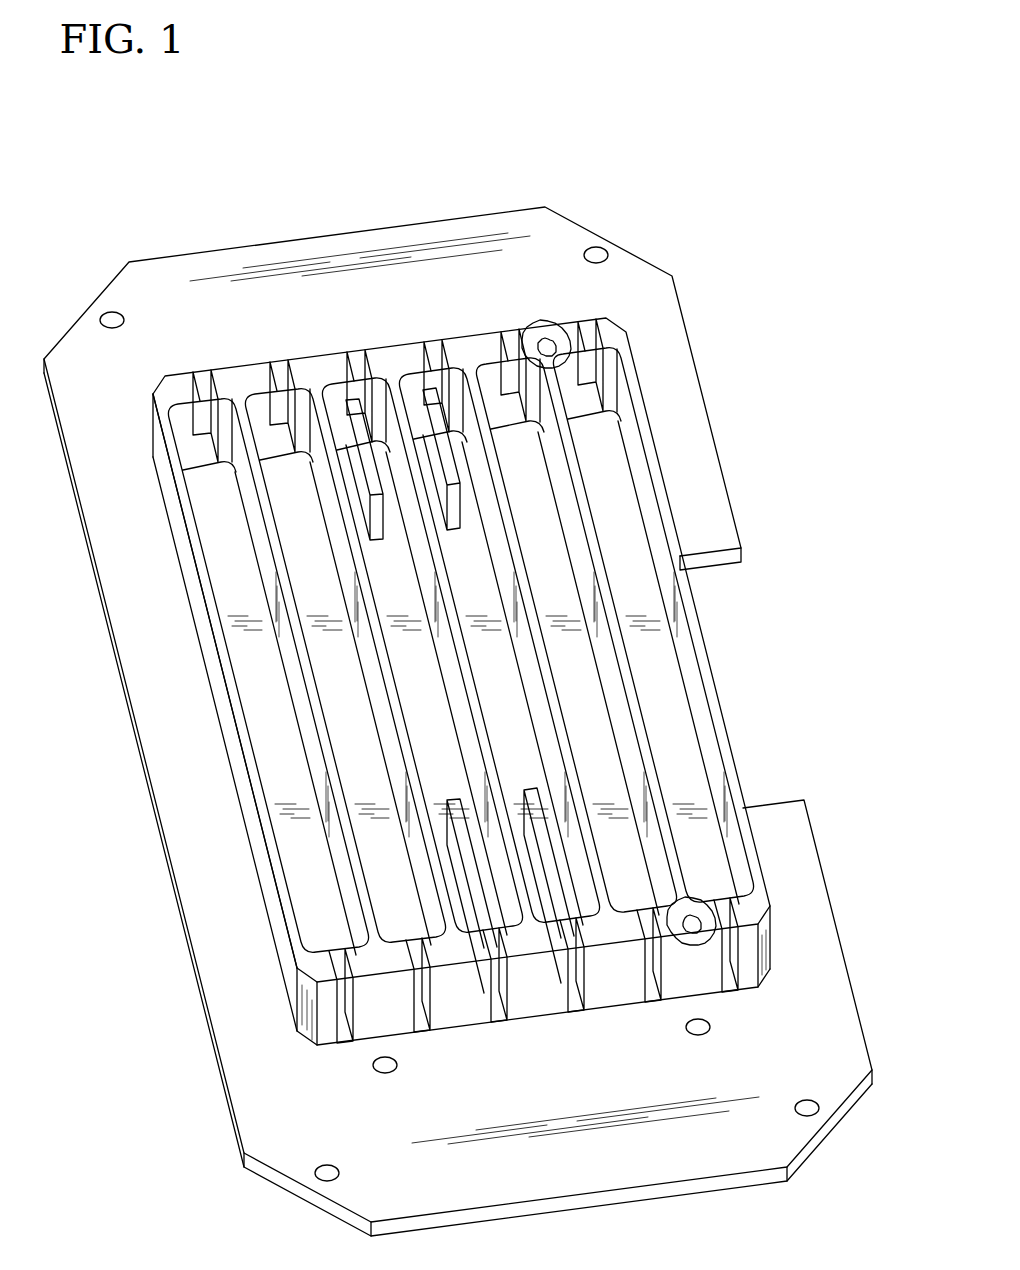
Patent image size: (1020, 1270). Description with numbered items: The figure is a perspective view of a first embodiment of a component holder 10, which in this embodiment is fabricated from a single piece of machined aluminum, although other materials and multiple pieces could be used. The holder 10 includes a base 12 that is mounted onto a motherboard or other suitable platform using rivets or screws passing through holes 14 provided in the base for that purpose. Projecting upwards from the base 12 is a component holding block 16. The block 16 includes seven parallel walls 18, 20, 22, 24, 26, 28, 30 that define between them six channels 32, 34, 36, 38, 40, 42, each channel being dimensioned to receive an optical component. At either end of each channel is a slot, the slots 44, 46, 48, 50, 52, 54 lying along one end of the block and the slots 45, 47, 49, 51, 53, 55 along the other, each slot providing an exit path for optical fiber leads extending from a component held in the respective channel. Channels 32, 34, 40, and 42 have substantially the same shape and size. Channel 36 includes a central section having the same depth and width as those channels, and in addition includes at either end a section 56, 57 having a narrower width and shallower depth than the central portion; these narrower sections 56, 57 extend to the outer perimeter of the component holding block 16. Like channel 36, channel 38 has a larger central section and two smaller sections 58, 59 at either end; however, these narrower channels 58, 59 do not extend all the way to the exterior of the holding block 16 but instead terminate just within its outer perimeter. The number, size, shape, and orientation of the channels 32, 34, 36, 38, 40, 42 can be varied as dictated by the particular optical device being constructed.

The component holder 10 is at (652, 129).
The base 12 is at (140, 285).
The holes 14 is at (597, 247).
The component holding block 16 is at (654, 348).
The wall 18 is at (205, 587).
The wall 20 is at (300, 650).
The wall 22 is at (370, 603).
The wall 24 is at (442, 582).
The wall 26 is at (537, 640).
The wall 28 is at (605, 596).
The wall 30 is at (673, 540).
The channel 32 is at (266, 702).
The channel 34 is at (357, 741).
The channel 36 is at (432, 712).
The channel 38 is at (502, 693).
The channel 40 is at (597, 733).
The channel 42 is at (665, 702).
The slot 44 is at (339, 1000).
The slot 46 is at (416, 992).
The slot 48 is at (494, 985).
The slot 50 is at (573, 980).
The slot 52 is at (645, 970).
The slot 54 is at (723, 960).
The slot 45 is at (195, 378).
The slot 47 is at (270, 372).
The slot 49 is at (340, 362).
The slot 51 is at (430, 348).
The slot 53 is at (505, 338).
The slot 55 is at (583, 327).
The narrower section 56 is at (472, 878).
The narrower section 57 is at (353, 372).
The smaller section 58 is at (553, 837).
The smaller section 59 is at (460, 441).